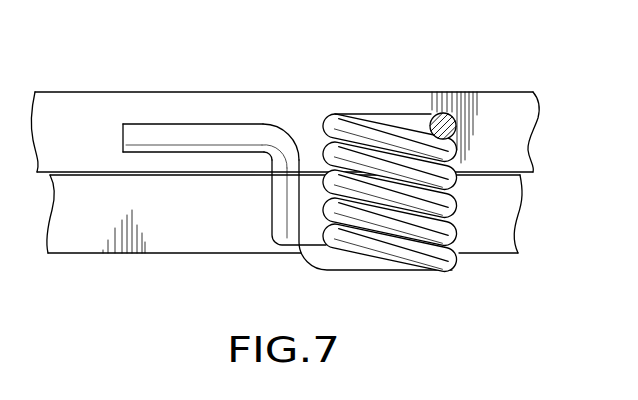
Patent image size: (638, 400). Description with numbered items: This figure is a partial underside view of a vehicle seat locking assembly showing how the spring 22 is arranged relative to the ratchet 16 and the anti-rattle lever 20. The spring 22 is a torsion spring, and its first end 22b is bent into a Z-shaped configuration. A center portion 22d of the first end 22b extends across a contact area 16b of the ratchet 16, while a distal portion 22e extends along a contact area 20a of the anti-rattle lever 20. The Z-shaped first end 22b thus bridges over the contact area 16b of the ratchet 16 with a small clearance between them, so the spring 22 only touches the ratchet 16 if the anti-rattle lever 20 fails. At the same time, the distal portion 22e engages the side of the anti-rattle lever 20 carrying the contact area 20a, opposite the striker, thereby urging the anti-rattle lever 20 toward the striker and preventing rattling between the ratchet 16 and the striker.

The ratchet 16 is at (497, 210).
The contact area of the ratchet 16b is at (170, 208).
The anti-rattle lever 20 is at (515, 130).
The contact area of the anti-rattle lever 20a is at (157, 103).
The spring 22 is at (423, 223).
The first end of the spring 22b is at (288, 117).
The center portion of the first end 22d is at (282, 195).
The distal portion of the first end 22e is at (190, 135).